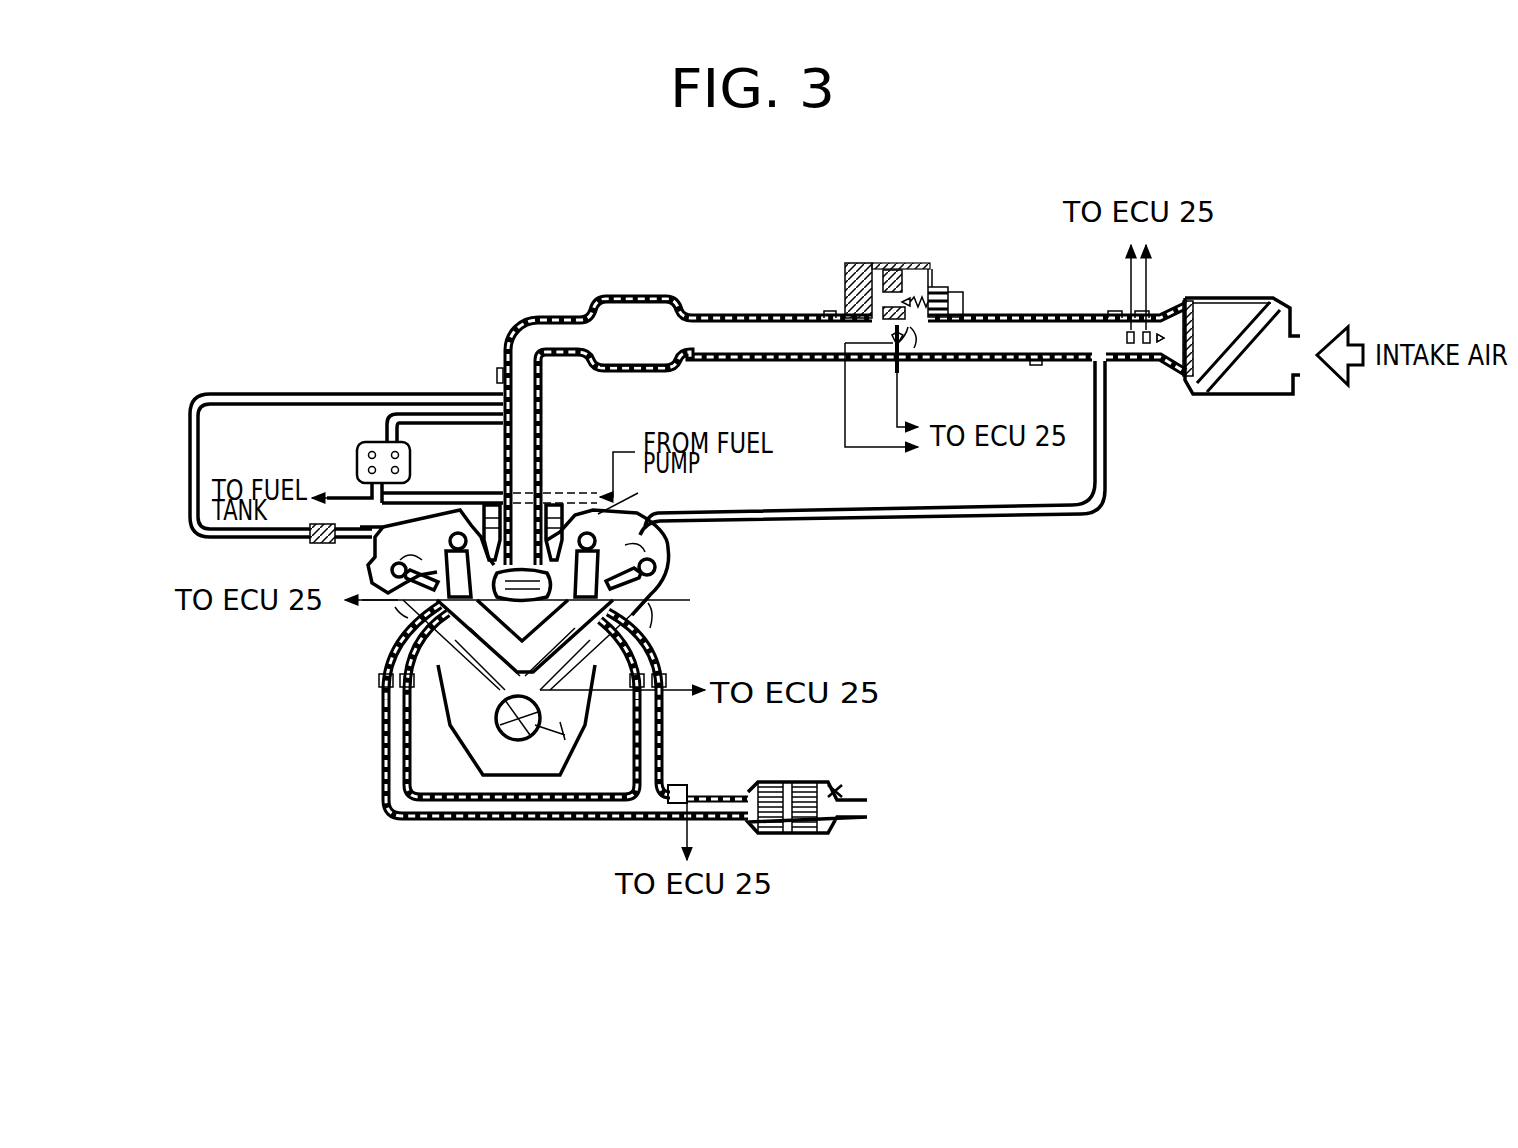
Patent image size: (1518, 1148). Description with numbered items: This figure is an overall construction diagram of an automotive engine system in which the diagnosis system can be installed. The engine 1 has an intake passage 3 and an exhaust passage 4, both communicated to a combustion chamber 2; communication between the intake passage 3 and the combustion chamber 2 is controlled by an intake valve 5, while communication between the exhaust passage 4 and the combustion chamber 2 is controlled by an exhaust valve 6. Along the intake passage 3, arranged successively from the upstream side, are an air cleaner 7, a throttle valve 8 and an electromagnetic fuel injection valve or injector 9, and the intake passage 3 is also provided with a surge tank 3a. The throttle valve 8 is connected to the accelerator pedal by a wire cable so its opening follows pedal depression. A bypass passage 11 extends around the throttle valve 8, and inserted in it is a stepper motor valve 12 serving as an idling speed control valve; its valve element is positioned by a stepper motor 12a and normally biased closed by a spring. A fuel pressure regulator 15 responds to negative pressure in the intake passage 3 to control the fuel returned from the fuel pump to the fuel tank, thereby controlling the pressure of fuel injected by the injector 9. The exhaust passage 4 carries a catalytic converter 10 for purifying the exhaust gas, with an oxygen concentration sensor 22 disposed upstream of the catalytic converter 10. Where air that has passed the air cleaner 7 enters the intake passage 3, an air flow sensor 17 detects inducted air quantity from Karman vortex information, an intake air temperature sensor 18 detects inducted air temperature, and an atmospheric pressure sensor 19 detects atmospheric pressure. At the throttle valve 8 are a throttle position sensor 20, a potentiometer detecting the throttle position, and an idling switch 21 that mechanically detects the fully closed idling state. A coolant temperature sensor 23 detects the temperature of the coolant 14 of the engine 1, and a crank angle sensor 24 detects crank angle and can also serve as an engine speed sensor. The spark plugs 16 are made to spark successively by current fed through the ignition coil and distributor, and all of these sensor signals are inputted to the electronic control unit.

The engine 1 is at (648, 611).
The combustion chamber 2 is at (395, 703).
The intake passage 3 is at (748, 316).
The surge tank 3a is at (633, 304).
The exhaust passage 4 is at (380, 790).
The intake valve 5 is at (418, 598).
The exhaust valve 6 is at (402, 640).
The air cleaner 7 is at (1266, 297).
The throttle valve 8 is at (882, 362).
The electromagnetic fuel injection valve (injector) 9 is at (487, 518).
The catalytic converter (three-way catalyst) 10 is at (812, 782).
The bypass passage 11 is at (892, 290).
The stepper motor valve (STM valve) 12 is at (936, 287).
The stepper motor (ISC actuator) 12a is at (963, 292).
The coolant 14 is at (630, 495).
The fuel pressure regulator 15 is at (410, 447).
The spark plugs 16 is at (395, 588).
The air flow sensor (inducted air quantity sensor) 17 is at (1153, 328).
The intake air temperature sensor 18 is at (1126, 328).
The atmospheric pressure sensor 19 is at (1153, 328).
The throttle position sensor 20 is at (916, 340).
The idling switch 21 is at (901, 362).
The oxygen concentration sensor (O2 sensor) 22 is at (678, 785).
The coolant temperature sensor 23 is at (492, 505).
The crank angle sensor 24 is at (572, 740).